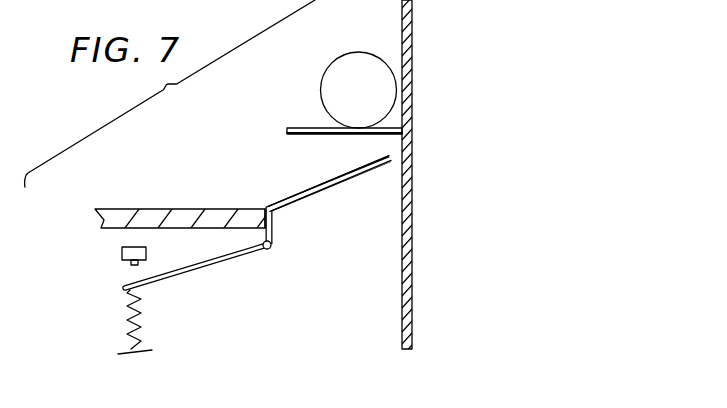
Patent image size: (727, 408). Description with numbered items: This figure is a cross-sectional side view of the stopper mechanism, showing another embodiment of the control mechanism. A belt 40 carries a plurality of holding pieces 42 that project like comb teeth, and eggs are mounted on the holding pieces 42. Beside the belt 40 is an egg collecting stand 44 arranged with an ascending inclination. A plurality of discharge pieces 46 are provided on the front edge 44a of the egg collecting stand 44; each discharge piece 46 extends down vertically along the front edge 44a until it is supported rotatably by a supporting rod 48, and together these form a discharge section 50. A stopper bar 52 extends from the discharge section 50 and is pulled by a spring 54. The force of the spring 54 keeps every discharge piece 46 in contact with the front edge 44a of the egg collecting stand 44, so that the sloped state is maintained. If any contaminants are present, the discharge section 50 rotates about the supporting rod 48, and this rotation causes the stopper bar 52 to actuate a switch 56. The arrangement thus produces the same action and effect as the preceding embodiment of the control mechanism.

The belt 40 is at (412, 92).
The holding piece 42 is at (295, 128).
The egg collecting stand 44 is at (125, 213).
The front edge 44a is at (299, 228).
The discharge piece 46 is at (329, 187).
The supporting rod 48 is at (280, 269).
The discharge section 50 is at (270, 194).
The stopper bar 52 is at (190, 272).
The spring 54 is at (133, 310).
The switch 56 is at (122, 255).